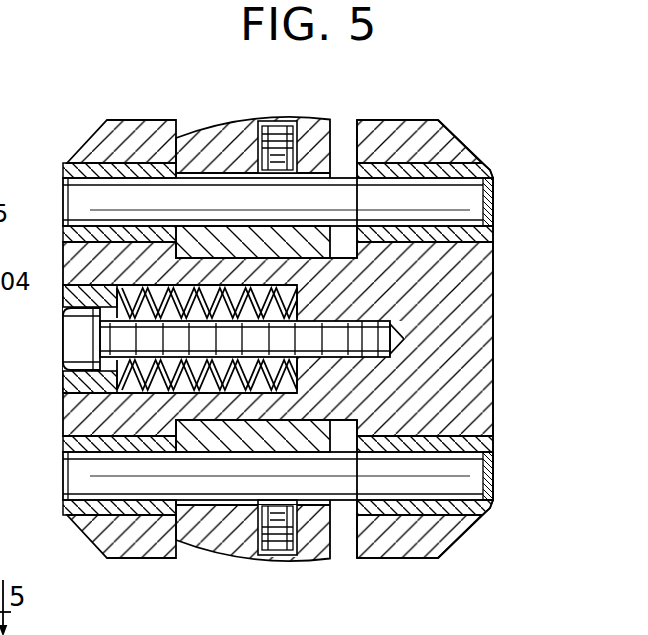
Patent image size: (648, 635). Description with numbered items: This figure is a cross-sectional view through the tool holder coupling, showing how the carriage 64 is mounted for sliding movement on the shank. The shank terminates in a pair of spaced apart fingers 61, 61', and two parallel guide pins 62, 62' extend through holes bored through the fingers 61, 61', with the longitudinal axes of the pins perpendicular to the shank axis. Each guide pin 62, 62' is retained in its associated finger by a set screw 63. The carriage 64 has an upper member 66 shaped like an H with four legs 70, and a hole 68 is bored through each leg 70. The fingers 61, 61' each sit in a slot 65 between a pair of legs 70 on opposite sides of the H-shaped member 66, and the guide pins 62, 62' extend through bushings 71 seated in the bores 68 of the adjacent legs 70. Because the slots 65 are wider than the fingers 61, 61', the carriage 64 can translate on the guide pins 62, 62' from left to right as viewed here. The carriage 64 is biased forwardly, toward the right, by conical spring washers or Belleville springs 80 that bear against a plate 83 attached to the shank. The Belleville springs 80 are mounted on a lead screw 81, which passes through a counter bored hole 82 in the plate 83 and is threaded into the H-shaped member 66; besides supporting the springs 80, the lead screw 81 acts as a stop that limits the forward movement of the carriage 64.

The finger 61 is at (253, 508).
The finger 61' is at (253, 164).
The guide pin 62 is at (278, 476).
The guide pin 62' is at (278, 202).
The set screw 63 is at (276, 132).
The carriage 64 is at (500, 296).
The slot 65 is at (344, 140).
The upper member 66 is at (467, 337).
The hole 68 is at (68, 164).
The leg 70 is at (129, 121).
The bushing 71 is at (70, 231).
The Belleville spring 80 is at (263, 310).
The lead screw 81 is at (357, 319).
The counter bored hole 82 is at (63, 324).
The plate 83 is at (72, 382).